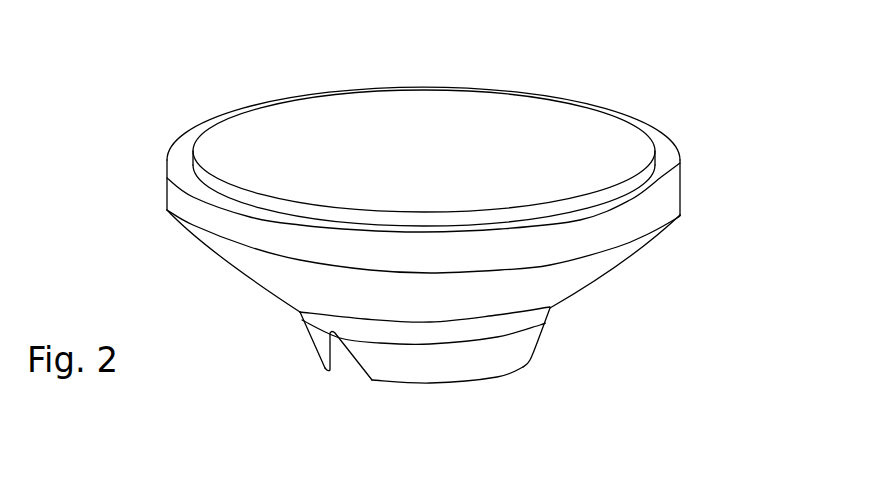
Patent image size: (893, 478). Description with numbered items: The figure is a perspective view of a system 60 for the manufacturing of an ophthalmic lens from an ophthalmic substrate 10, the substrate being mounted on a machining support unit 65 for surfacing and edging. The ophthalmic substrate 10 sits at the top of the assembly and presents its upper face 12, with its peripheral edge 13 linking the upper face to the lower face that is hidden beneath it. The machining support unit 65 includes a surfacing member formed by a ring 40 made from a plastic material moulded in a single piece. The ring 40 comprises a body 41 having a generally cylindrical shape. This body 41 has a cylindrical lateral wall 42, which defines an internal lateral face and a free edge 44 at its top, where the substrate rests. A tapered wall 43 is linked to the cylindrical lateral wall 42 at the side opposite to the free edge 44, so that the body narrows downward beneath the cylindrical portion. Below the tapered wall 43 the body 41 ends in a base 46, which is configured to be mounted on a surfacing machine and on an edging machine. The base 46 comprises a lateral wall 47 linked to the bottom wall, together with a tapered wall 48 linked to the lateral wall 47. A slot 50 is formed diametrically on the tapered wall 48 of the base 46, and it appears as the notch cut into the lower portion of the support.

The ophthalmic substrate 10 is at (548, 93).
The upper face 12 is at (473, 102).
The peripheral edge 13 is at (684, 163).
The ring 40 is at (167, 208).
The body 41 is at (213, 258).
The cylindrical lateral wall 42 is at (674, 199).
The tapered wall 43 is at (607, 268).
The free edge 44 is at (180, 158).
The base 46 is at (312, 344).
The lateral wall 47 is at (497, 327).
The tapered wall 48 is at (420, 372).
The slot 50 is at (343, 361).
The system 60 is at (693, 108).
The machining support unit 65 is at (719, 245).